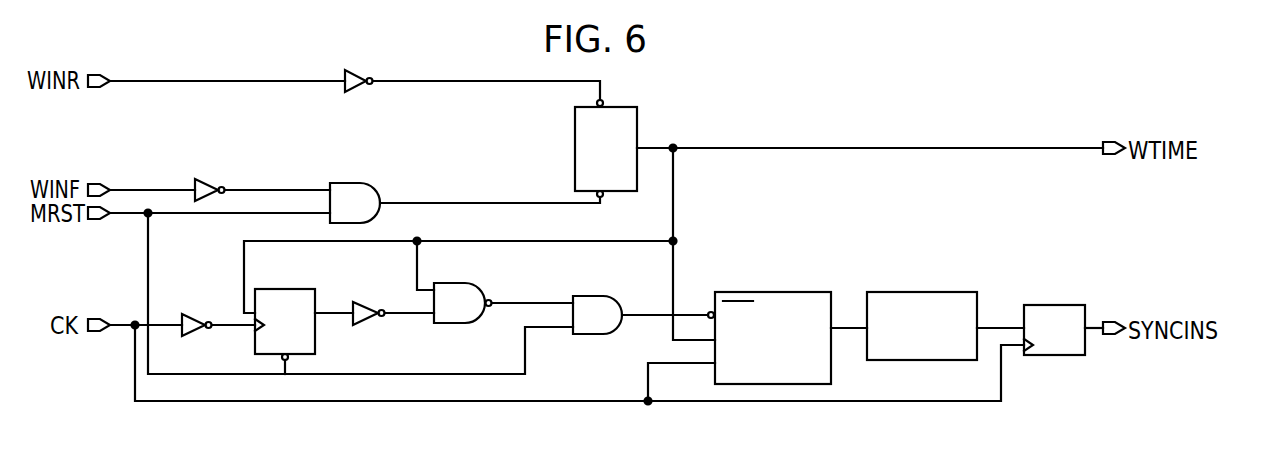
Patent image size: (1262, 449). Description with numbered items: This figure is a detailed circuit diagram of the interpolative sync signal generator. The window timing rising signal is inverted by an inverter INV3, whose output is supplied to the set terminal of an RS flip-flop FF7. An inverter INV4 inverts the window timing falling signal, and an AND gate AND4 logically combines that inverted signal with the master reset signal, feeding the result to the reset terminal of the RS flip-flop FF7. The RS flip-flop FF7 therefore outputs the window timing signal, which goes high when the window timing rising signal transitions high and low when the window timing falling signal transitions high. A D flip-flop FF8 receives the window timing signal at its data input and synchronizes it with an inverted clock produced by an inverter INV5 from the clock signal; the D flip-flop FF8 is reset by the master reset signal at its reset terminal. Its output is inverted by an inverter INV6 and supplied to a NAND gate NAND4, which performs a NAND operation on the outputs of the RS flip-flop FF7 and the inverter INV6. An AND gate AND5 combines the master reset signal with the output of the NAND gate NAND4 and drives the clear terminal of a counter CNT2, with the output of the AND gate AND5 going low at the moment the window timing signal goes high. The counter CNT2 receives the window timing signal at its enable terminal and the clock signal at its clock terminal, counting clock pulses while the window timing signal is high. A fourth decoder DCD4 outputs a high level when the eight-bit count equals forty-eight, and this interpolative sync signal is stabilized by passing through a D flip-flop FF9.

The inverter INV3 is at (362, 90).
The inverter INV4 is at (212, 181).
The AND gate AND4 is at (372, 186).
The RS flip-flop FF7 is at (637, 120).
The inverter INV5 is at (200, 314).
The D flip-flop FF8 is at (288, 289).
The inverter INV6 is at (368, 325).
The NAND gate NAND4 is at (484, 285).
The AND gate AND5 is at (596, 334).
The counter CNT2 is at (800, 292).
The fourth decoder DCD4 is at (953, 292).
The D flip-flop FF9 is at (1063, 305).